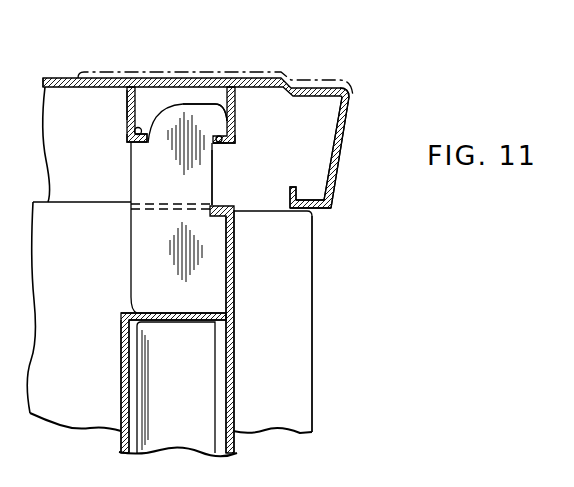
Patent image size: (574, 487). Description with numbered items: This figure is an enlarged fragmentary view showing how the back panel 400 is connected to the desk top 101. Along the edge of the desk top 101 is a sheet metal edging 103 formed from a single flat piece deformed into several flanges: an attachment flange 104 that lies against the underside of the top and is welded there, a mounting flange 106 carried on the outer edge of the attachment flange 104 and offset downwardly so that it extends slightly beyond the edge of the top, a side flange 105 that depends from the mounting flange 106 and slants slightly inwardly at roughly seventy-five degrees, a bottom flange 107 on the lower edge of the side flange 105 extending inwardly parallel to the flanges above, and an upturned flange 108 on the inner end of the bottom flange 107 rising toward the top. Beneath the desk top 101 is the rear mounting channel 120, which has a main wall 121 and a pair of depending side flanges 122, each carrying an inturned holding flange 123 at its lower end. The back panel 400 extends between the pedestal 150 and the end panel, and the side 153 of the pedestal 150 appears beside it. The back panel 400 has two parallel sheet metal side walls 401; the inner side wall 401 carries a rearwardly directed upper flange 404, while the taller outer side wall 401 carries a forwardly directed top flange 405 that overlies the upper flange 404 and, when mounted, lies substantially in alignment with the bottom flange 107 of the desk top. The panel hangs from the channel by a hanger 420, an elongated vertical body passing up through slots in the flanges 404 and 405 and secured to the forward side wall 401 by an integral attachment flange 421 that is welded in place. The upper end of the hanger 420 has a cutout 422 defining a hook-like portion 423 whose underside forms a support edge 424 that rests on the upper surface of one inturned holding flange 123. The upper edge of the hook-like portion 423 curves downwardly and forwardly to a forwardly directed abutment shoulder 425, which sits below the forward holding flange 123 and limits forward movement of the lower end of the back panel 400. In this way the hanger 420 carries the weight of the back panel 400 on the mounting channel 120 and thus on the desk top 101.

The desk top 101 is at (303, 70).
The edging 103 is at (245, 82).
The attachment flange 104 is at (53, 77).
The side flange 105 is at (340, 147).
The mounting flange 106 is at (345, 112).
The bottom flange 107 is at (320, 210).
The upturned flange 108 is at (323, 190).
The mounting channel 120 is at (143, 78).
The main wall 121 is at (127, 100).
The side flange 122 is at (130, 117).
The inturned holding flange 123 is at (130, 134).
The pedestal 150 is at (283, 333).
The side of support member 153 is at (283, 389).
The back panel 400 is at (120, 392).
The side wall 401 is at (235, 274).
The upper flange 404 is at (168, 315).
The top flange 405 is at (232, 206).
The hanger 420 is at (150, 250).
The attachment flange 421 is at (132, 417).
The cutout 422 is at (213, 183).
The hook-like portion 423 is at (215, 120).
The support edge 424 is at (235, 146).
The abutment shoulder 425 is at (137, 141).